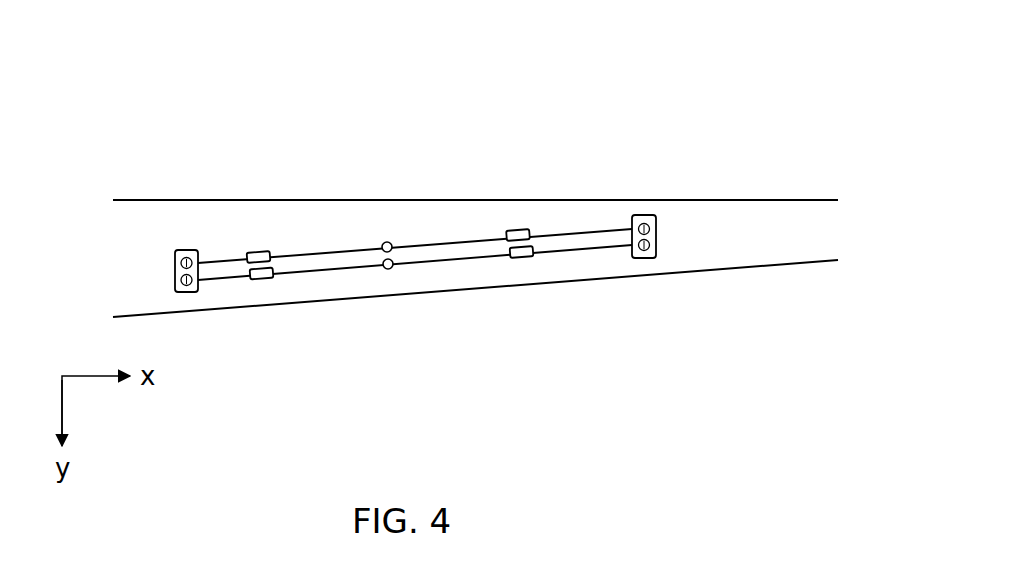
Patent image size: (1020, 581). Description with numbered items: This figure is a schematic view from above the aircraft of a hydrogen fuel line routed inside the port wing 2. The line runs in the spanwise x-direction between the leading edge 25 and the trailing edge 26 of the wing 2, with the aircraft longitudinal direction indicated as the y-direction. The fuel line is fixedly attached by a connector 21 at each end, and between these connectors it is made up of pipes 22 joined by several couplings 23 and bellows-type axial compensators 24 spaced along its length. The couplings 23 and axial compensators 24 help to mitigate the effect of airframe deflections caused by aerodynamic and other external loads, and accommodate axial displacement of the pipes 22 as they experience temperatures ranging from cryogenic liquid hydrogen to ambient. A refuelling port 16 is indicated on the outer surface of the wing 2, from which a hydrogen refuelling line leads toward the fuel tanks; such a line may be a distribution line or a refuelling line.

The port wing 2 is at (695, 80).
The refuelling port 16 is at (414, 260).
The connector 21 is at (174, 270).
The pipe 22 is at (325, 254).
The coupling 23 is at (387, 242).
The axial compensator 24 is at (257, 250).
The leading edge 25 is at (738, 268).
The trailing edge 26 is at (780, 200).